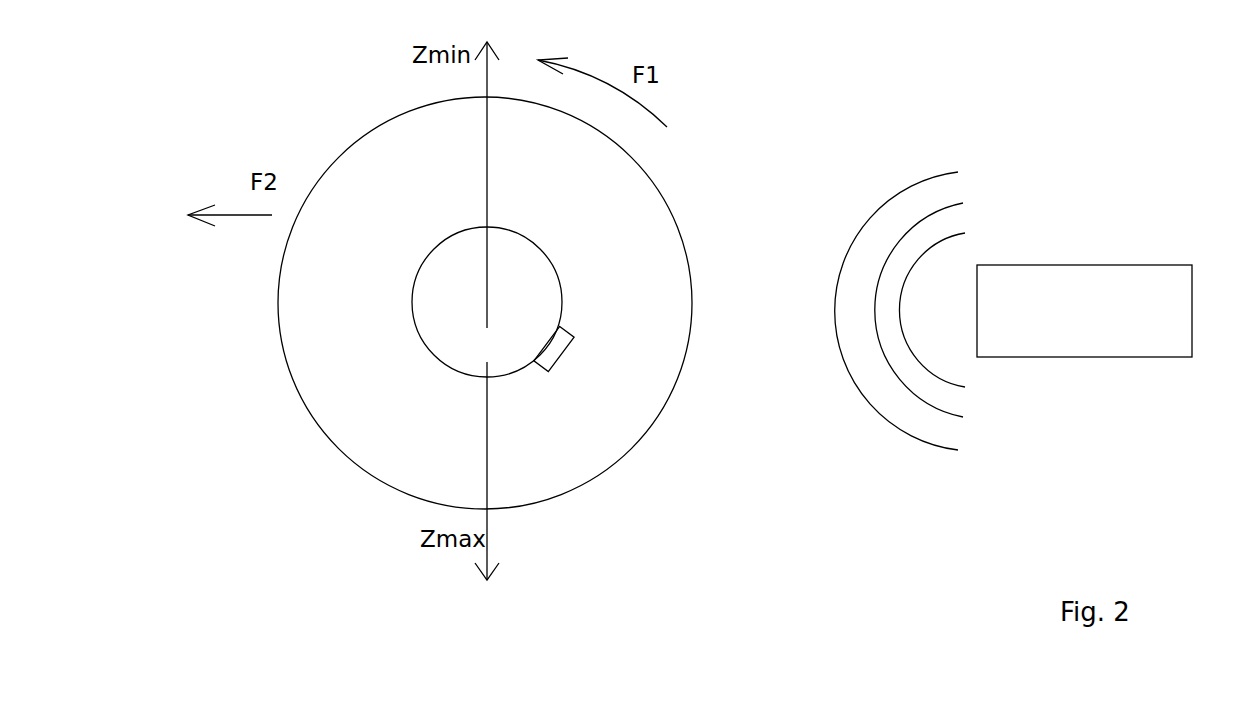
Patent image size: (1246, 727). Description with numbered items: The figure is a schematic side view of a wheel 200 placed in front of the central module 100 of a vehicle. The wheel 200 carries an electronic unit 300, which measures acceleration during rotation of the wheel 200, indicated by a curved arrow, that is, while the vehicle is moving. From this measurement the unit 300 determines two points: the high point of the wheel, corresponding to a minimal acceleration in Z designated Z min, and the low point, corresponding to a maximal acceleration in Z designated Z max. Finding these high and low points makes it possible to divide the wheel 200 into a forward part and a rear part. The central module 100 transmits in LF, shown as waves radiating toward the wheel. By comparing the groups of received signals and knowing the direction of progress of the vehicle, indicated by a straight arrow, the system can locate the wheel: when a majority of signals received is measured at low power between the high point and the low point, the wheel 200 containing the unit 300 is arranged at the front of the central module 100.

The central module 100 is at (1115, 278).
The wheel 200 is at (658, 235).
The electronic unit 300 is at (546, 340).